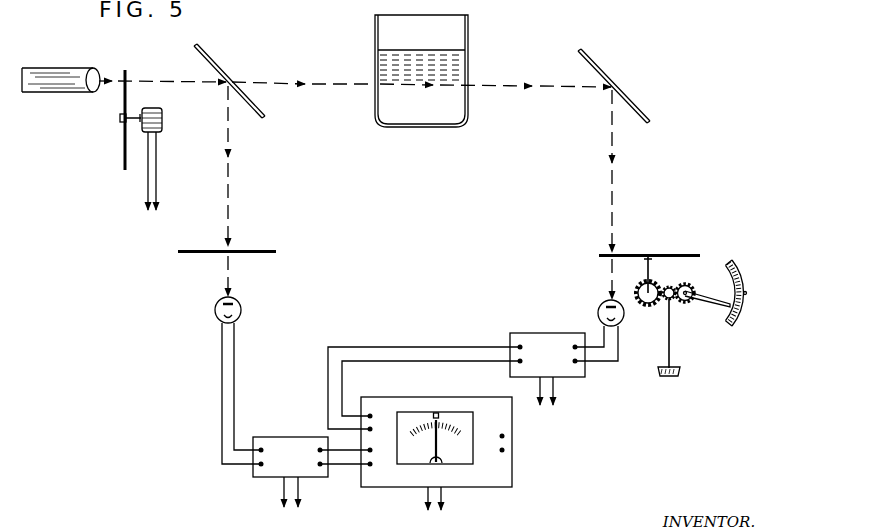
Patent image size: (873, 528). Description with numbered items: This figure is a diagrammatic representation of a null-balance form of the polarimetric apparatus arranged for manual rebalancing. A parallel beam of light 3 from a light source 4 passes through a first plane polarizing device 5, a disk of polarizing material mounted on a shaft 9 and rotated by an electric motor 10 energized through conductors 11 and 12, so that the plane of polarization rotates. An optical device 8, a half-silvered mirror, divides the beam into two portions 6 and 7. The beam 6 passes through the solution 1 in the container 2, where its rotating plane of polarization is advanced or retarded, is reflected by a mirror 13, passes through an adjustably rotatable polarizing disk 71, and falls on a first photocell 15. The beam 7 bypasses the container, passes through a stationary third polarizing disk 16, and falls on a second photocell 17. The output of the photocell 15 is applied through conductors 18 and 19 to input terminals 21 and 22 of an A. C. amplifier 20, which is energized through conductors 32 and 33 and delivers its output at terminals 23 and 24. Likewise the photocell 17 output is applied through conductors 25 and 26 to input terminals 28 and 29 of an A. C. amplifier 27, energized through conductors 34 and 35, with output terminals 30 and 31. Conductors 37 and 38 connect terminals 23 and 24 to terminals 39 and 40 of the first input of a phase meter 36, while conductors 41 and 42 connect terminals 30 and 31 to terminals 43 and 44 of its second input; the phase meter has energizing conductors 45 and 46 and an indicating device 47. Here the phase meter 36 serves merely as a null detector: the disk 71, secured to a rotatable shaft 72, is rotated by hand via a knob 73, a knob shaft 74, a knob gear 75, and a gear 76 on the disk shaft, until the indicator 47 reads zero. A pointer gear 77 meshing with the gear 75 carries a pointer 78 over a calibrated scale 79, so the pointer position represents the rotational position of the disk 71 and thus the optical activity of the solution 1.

The solution 1 is at (452, 110).
The container 2 is at (468, 31).
The parallel beam of light 3 is at (183, 82).
The light source 4 is at (52, 72).
The first plane polarizing device 5 is at (127, 75).
The beam portion 6 is at (320, 84).
The beam portion 7 is at (229, 180).
The optical device 8 is at (209, 56).
The shaft 9 is at (136, 116).
The electric motor 10 is at (163, 120).
The energizing conductor 11 is at (147, 192).
The energizing conductor 12 is at (157, 192).
The mirror 13 is at (601, 65).
The first photoelectric device or photocell 15 is at (602, 300).
The third plane polarizing device 16 is at (250, 250).
The second photoelectric device or photocell 17 is at (241, 304).
The photocell output conductor 18 is at (598, 343).
The photocell output conductor 19 is at (621, 355).
The A. C. amplifier 20 is at (541, 332).
The amplifier input terminal 21 is at (575, 346).
The amplifier input terminal 22 is at (580, 365).
The amplifier output terminal 23 is at (518, 346).
The amplifier output terminal 24 is at (518, 364).
The photocell output conductor 25 is at (220, 357).
The photocell output conductor 26 is at (237, 357).
The A. C. amplifier 27 is at (287, 436).
The amplifier input terminal 28 is at (258, 466).
The amplifier input terminal 29 is at (261, 446).
The amplifier output terminal 30 is at (319, 446).
The amplifier output terminal 31 is at (320, 469).
The energizing conductor 32 is at (539, 391).
The energizing conductor 33 is at (556, 393).
The energizing conductor 34 is at (283, 495).
The energizing conductor 35 is at (302, 498).
The phase meter 36 is at (437, 397).
The conductor 37 is at (382, 344).
The conductor 38 is at (388, 362).
The phase meter input terminal 39 is at (374, 407).
The phase meter input terminal 40 is at (379, 431).
The conductor 41 is at (351, 451).
The conductor 42 is at (340, 470).
The phase meter input terminal 43 is at (379, 450).
The phase meter input terminal 44 is at (382, 470).
The energizing conductor 45 is at (427, 498).
The energizing conductor 46 is at (444, 498).
The indicating device 47 is at (458, 412).
The adjustably rotatable polarizing disk 71 is at (676, 253).
The rotatable shaft 72 is at (645, 272).
The knob 73 is at (668, 378).
The knob shaft 74 is at (670, 346).
The knob gear 75 is at (669, 285).
The gear 76 is at (648, 306).
The pointer gear 77 is at (688, 285).
The pointer 78 is at (711, 303).
The scale 79 is at (744, 289).